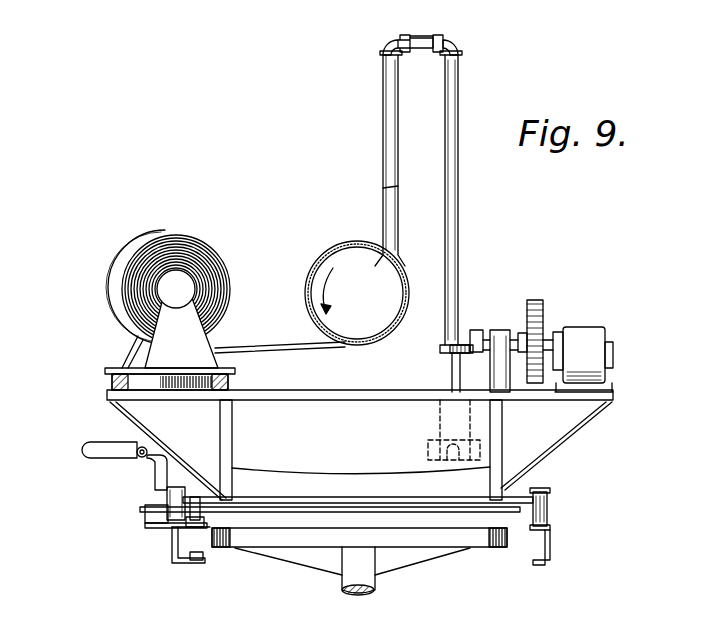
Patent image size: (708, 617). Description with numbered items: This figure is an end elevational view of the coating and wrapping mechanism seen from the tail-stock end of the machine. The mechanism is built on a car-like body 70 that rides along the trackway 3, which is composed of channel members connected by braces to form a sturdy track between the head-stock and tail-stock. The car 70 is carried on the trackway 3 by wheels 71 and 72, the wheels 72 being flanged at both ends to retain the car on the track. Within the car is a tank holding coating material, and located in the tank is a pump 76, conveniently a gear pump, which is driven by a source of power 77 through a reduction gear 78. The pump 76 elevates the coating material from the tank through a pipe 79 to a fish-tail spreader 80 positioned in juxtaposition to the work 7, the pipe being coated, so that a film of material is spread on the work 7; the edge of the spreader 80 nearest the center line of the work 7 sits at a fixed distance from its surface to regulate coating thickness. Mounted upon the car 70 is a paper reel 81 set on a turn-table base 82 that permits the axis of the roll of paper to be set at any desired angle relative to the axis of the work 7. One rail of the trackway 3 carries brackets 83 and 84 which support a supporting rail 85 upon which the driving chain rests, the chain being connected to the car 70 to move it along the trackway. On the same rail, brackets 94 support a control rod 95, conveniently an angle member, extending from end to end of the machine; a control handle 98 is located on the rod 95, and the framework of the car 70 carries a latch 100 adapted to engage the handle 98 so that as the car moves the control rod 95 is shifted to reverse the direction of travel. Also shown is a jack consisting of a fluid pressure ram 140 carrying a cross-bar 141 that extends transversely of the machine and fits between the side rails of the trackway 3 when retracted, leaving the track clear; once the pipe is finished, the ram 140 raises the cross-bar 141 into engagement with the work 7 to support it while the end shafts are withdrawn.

The trackway 3 is at (552, 543).
The work 7 is at (330, 262).
The car-like body 70 is at (125, 408).
The wheels 71 is at (178, 487).
The wheels 72 is at (545, 490).
The pump 76 is at (485, 440).
The source of power 77 is at (580, 337).
The reduction gear 78 is at (533, 298).
The pipe 79 is at (462, 200).
The fish-tail spreader 80 is at (385, 212).
The paper reels 81 is at (130, 350).
The turn-table base 82 is at (236, 378).
The bracket 83 is at (200, 530).
The bracket 84 is at (192, 562).
The supporting rail 85 is at (200, 507).
The brackets 94 is at (150, 533).
The control rod 95 is at (148, 513).
The control handle 98 is at (152, 480).
The latch 100 is at (85, 448).
The fluid pressure ram 140 is at (370, 578).
The cross-bar 141 is at (487, 548).